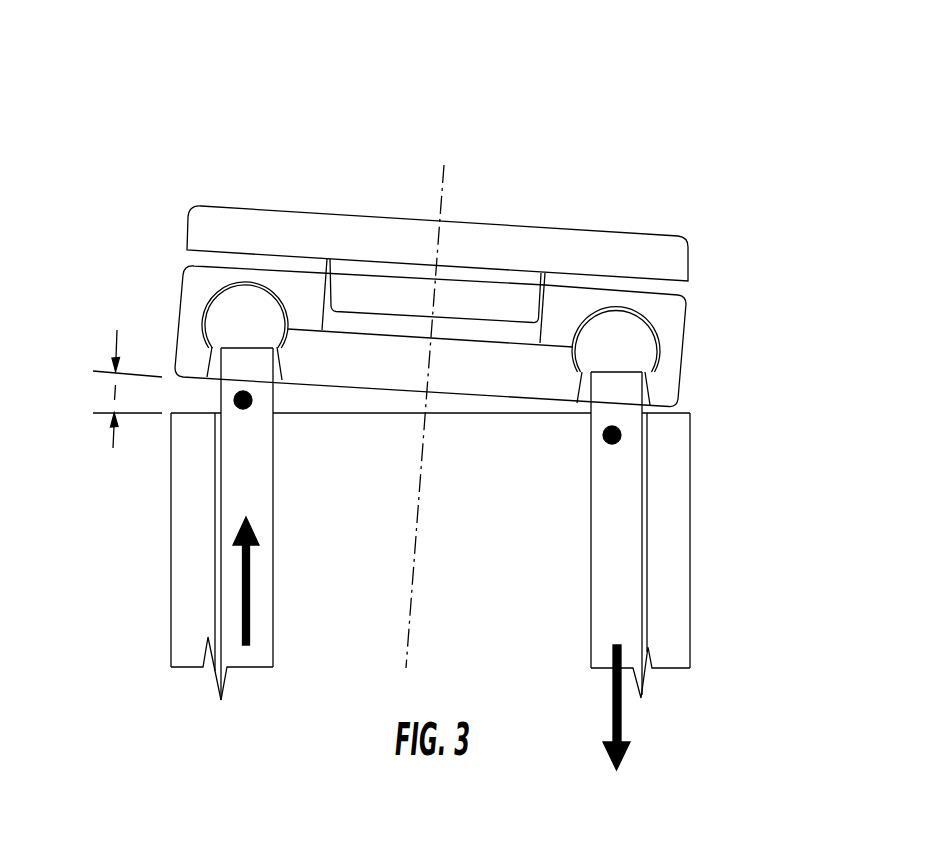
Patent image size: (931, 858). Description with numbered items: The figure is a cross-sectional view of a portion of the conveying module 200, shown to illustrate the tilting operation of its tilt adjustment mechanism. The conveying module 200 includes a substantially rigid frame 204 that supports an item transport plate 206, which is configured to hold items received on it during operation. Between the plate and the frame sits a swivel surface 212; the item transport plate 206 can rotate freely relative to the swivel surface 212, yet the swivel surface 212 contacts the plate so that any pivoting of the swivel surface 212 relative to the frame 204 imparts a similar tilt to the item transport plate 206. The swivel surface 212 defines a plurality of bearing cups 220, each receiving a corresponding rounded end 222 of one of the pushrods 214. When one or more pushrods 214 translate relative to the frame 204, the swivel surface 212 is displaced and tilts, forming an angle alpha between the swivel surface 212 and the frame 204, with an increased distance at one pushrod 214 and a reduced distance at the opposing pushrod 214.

The conveying module 200 is at (188, 103).
The frame 204 is at (170, 577).
The item transport plate 206 is at (524, 224).
The swivel surface 212 is at (688, 318).
The pushrods 214 is at (253, 404).
The bearing cups 220 is at (205, 299).
The rounded end 222 is at (619, 348).